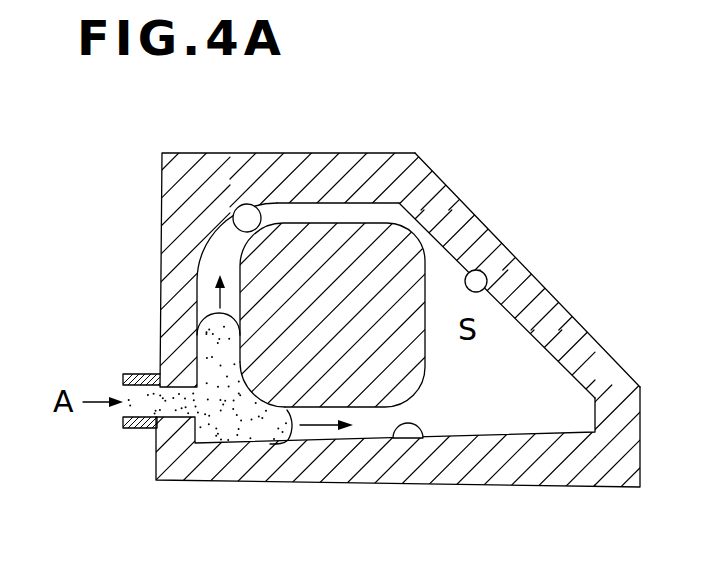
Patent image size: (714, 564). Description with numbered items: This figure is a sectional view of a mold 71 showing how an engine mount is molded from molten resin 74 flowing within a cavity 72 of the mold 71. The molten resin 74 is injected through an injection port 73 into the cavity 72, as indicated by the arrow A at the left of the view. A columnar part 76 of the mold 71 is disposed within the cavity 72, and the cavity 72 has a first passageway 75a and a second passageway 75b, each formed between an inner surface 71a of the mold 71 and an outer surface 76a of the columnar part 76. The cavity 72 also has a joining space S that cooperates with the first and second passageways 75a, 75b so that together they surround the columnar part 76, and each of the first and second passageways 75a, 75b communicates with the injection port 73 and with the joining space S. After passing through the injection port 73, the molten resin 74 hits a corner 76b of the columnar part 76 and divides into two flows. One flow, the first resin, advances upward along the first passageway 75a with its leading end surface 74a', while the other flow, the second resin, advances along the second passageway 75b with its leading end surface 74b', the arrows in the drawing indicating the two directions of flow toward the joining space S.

The mold 71 is at (292, 153).
The inner surface of the mold 71a is at (337, 202).
The cavity 72 is at (514, 256).
The injection port 73 is at (127, 411).
The molten resin 74 is at (226, 420).
The leading end surface of the first resin 74a' is at (156, 258).
The leading end surface of the second resin 74b' is at (363, 476).
The first passageway 75a is at (256, 208).
The second passageway 75b is at (423, 434).
The columnar part 76 is at (427, 343).
The outer surface of the columnar part 76a is at (440, 176).
The corner of the columnar part 76b is at (238, 384).